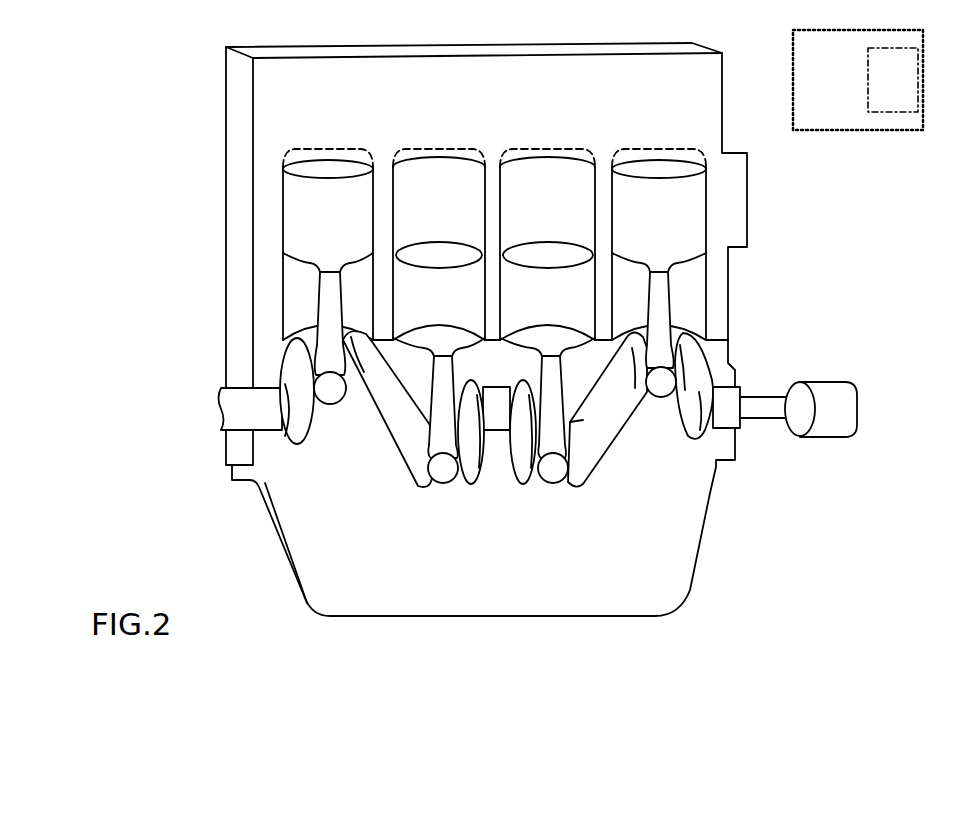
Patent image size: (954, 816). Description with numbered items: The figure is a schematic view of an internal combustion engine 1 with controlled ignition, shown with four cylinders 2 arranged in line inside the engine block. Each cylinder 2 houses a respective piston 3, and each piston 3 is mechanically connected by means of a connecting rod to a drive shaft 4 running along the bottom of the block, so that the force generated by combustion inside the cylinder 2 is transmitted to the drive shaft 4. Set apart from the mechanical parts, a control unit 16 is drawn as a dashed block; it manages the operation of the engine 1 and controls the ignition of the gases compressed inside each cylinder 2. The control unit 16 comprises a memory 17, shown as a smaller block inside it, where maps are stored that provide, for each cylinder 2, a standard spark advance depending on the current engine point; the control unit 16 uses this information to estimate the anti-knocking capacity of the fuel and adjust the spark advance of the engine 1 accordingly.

The internal combustion engine 1 is at (412, 329).
The cylinder 2 is at (437, 172).
The piston 3 is at (676, 224).
The drive shaft 4 is at (236, 403).
The control unit 16 is at (858, 80).
The memory 17 is at (893, 80).